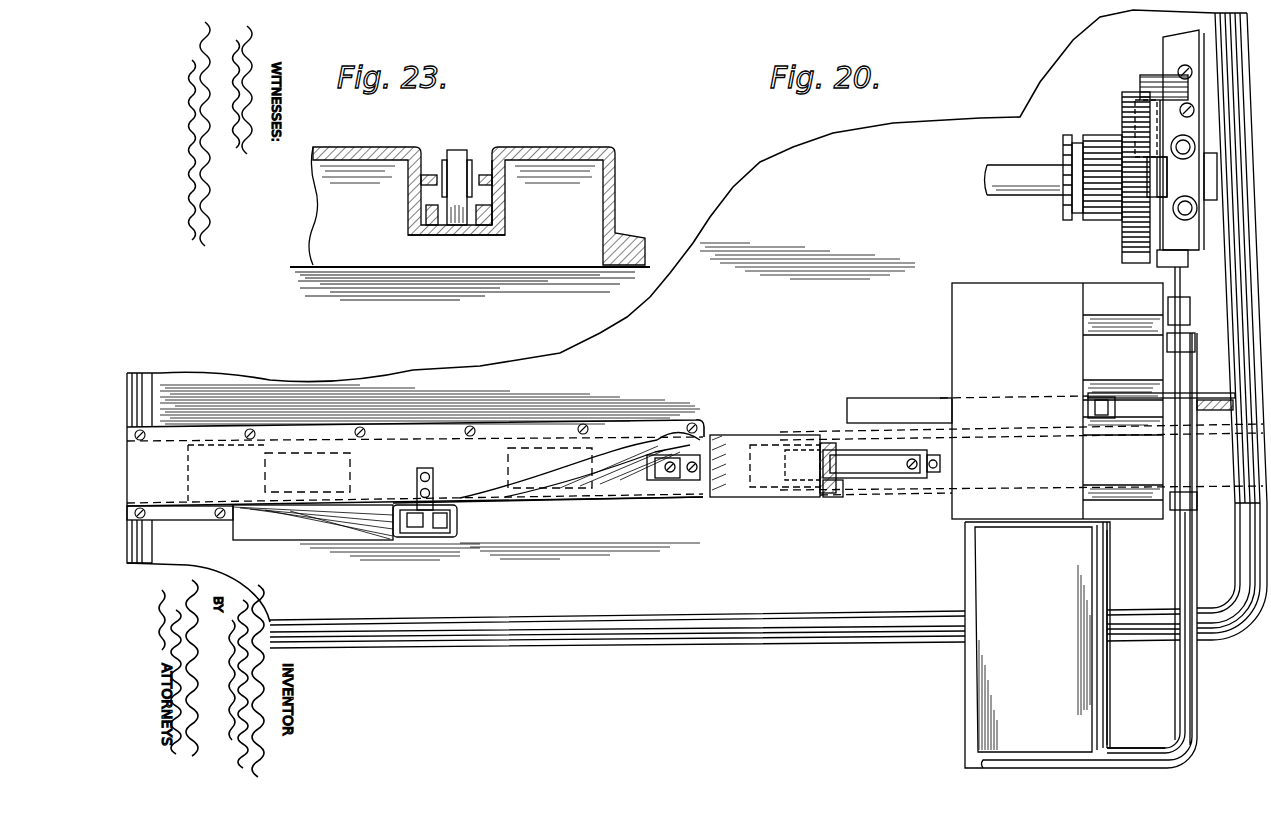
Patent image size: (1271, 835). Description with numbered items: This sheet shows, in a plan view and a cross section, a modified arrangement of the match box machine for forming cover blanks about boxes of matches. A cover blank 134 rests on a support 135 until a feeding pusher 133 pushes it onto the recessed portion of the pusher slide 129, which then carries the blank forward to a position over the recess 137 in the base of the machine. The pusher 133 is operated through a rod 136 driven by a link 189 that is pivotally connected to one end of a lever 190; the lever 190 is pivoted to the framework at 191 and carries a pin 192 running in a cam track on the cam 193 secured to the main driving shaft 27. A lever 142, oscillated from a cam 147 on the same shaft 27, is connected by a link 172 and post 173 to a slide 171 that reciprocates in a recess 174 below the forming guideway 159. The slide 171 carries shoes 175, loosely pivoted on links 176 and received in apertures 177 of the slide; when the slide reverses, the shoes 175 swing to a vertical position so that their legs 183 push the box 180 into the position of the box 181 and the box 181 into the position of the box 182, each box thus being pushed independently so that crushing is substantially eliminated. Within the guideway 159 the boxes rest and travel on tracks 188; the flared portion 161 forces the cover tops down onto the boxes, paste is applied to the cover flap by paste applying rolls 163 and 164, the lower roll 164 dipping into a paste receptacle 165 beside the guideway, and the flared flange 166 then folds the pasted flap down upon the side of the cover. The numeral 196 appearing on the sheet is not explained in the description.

In FIG. 20, the main shaft 27 is at (995, 193).
In FIG. 20, the pusher slide 129 is at (1057, 401).
In FIG. 20, the feeding pusher 133 is at (1003, 757).
In FIG. 20, the cover blank 134 is at (1033, 639).
In FIG. 20, the support 135 is at (1104, 672).
In FIG. 20, the rod 136 is at (1185, 690).
In FIG. 20, the recess 137 is at (863, 450).
In FIG. 20, the lever 142 is at (1223, 410).
In FIG. 20, the cam 147 is at (1103, 180).
In FIG. 20, the forming guideway 159 is at (712, 437).
In FIG. 20, the flared portion 161 is at (660, 467).
In FIG. 20, the paste applying roll 163 is at (443, 523).
In FIG. 20, the paste applying roll 164 is at (452, 520).
In FIG. 20, the paste receptacle 165 is at (405, 533).
In FIG. 20, the flared flange 166 is at (373, 523).
In FIG. 23, the slide 171 is at (494, 220).
In FIG. 20, the link 172 is at (1182, 396).
In FIG. 20, the post 173 is at (1087, 404).
In FIG. 23, the recess 174 is at (496, 193).
In FIG. 23, the shoe 175 is at (463, 160).
In FIG. 20, the shoe 175 is at (828, 482).
In FIG. 23, the link 176 is at (443, 168).
In FIG. 20, the link 176 is at (870, 478).
In FIG. 23, the aperture 177 is at (475, 233).
In FIG. 20, the match box 180 is at (765, 466).
In FIG. 20, the match box 181 is at (550, 468).
In FIG. 20, the match box 182 is at (307, 472).
In FIG. 23, the leg 183 is at (456, 166).
In FIG. 23, the track 188 is at (410, 192).
In FIG. 20, the track 188 is at (648, 488).
In FIG. 20, the link 189 is at (1181, 272).
In FIG. 20, the lever 190 is at (1163, 257).
In FIG. 20, the pivot 191 is at (1170, 85).
In FIG. 20, the pin 192 is at (1150, 135).
In FIG. 20, the cam 193 is at (1127, 227).
In FIG. 20, the bracket 196 is at (1192, 123).